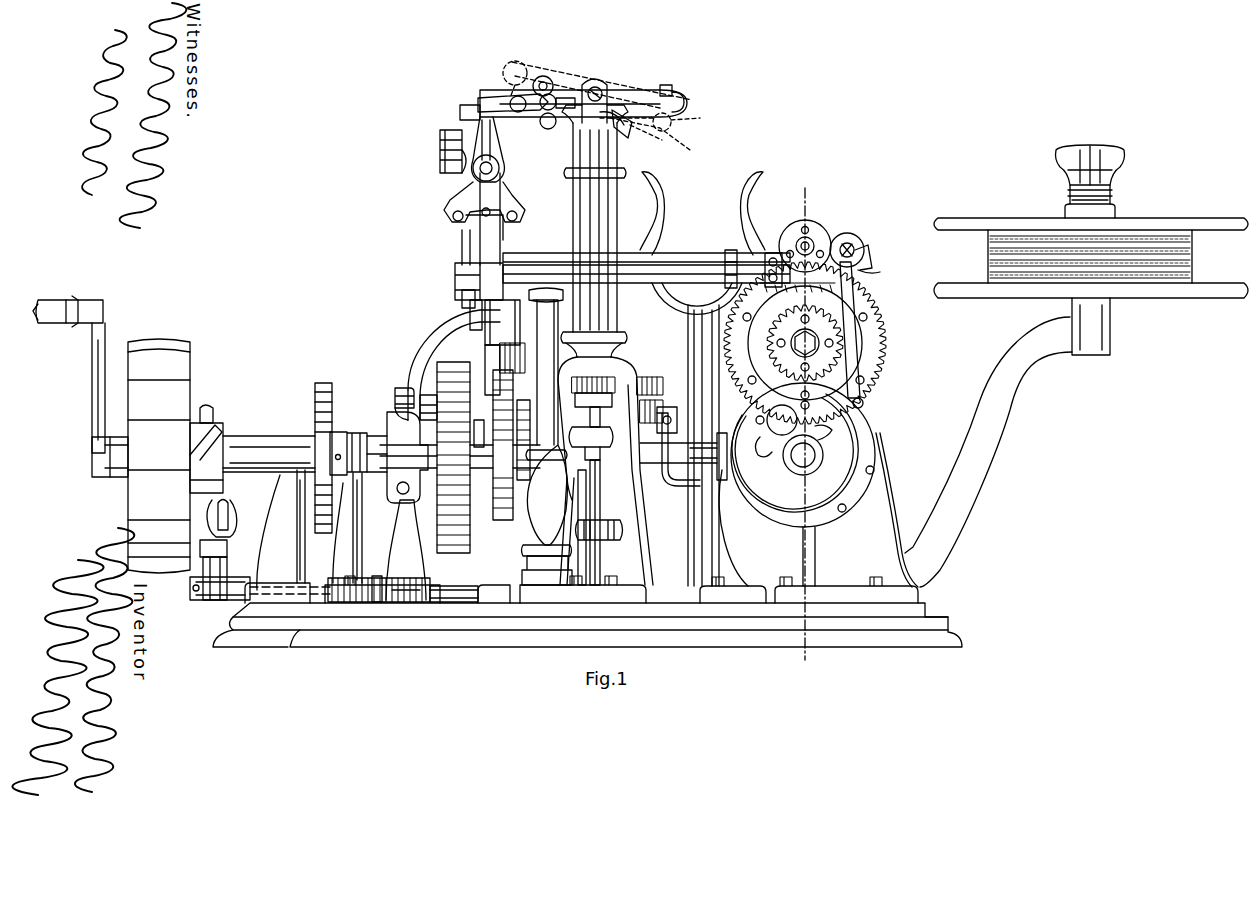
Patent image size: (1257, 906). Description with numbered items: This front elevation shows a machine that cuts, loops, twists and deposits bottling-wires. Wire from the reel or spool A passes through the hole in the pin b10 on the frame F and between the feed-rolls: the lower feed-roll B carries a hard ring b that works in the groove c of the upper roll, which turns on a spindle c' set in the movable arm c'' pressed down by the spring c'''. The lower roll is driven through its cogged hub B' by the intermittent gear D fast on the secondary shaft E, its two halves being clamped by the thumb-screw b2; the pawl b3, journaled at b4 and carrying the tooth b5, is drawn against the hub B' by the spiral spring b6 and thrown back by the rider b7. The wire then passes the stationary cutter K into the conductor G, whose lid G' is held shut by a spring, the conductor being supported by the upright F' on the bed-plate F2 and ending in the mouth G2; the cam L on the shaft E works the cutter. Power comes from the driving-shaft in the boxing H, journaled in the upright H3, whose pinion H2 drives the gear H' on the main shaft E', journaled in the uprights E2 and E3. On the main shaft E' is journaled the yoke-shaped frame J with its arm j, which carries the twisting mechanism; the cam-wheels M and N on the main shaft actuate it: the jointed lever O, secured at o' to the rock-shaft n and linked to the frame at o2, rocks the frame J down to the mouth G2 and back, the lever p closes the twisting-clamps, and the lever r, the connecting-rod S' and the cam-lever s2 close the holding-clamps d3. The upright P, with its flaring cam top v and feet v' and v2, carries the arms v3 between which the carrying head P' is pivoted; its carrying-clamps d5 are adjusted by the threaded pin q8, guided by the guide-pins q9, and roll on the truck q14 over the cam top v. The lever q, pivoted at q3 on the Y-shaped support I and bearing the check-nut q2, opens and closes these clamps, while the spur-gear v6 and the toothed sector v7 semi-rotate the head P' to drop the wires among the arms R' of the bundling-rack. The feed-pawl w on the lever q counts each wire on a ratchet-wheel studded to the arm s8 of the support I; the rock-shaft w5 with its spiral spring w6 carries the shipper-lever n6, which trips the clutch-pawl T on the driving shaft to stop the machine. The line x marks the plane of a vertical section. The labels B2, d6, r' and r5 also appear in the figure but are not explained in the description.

The spool A is at (1091, 250).
The crank drum / gear B is at (111, 434).
The pinion B' is at (805, 343).
The gear plate B2 is at (805, 343).
The gear wheel b is at (805, 343).
The slot b2 is at (782, 420).
The gear rim b3 is at (880, 330).
The link pin b4 is at (870, 240).
The gear flange b5 is at (888, 346).
The rack teeth b6 is at (797, 281).
The link pivot b7 is at (875, 406).
The link arm b10 is at (866, 276).
The disc c is at (812, 239).
The disc hub c' is at (826, 206).
The eccentric c'' is at (855, 238).
The connecting rod c''' is at (879, 321).
The cam wheel D is at (870, 445).
The lever arm d3 is at (470, 140).
The lever position d5 is at (690, 150).
The lever position d6 is at (700, 120).
The hub E is at (803, 455).
The fork arm E' is at (537, 454).
The standard E2 is at (720, 548).
The standard E3 is at (347, 528).
The frame F is at (818, 510).
The stand F' is at (547, 436).
The base F2 is at (587, 624).
The shaft G is at (646, 274).
The upper shaft G' is at (646, 246).
The bracket G2 is at (478, 292).
The shaft H is at (305, 454).
The gear H' is at (333, 458).
The collar H2 is at (340, 437).
The bearing standard H3 is at (281, 530).
The rod I is at (597, 522).
The arm J is at (454, 365).
The rod j is at (460, 243).
The ring K is at (697, 298).
The shaft L is at (553, 456).
The gear M is at (453, 457).
The gear N is at (503, 445).
The slide n is at (470, 582).
The lever n6 is at (232, 552).
The standard O is at (406, 550).
The collar o' is at (428, 389).
The nut o2 is at (402, 388).
The column P is at (594, 231).
The head P' is at (576, 86).
The pinion p is at (523, 440).
The lever q is at (606, 440).
The block q2 is at (614, 412).
The block q3 is at (664, 414).
The catch q8 is at (690, 96).
The block q9 is at (543, 116).
The block q14 is at (556, 130).
The guide arm R' is at (702, 213).
The rod r is at (452, 234).
The collar r' is at (459, 301).
The pin r5 is at (478, 460).
The sleeve S' is at (507, 347).
The clutch s2 is at (525, 378).
The collar s8 is at (599, 533).
The cam T is at (218, 435).
The lever v is at (618, 135).
The arm v' is at (605, 471).
The block v2 is at (587, 386).
The bracket v3 is at (594, 101).
The collar v6 is at (632, 365).
The clutch v7 is at (655, 380).
The rack w is at (378, 578).
The rod w5 is at (260, 580).
The pin w6 is at (376, 575).
The section line x is at (802, 424).